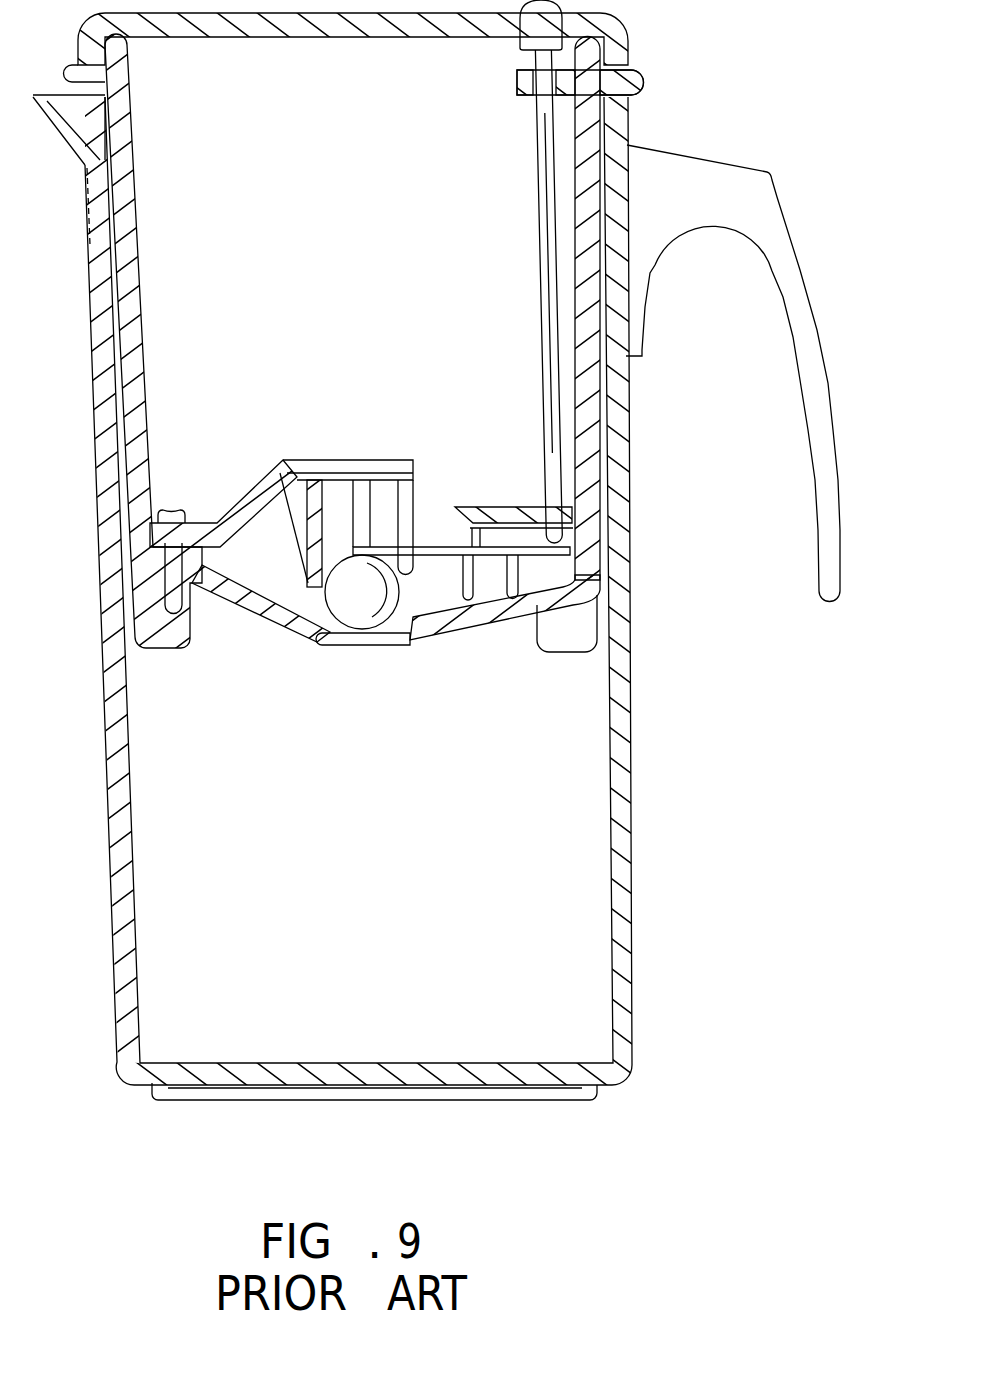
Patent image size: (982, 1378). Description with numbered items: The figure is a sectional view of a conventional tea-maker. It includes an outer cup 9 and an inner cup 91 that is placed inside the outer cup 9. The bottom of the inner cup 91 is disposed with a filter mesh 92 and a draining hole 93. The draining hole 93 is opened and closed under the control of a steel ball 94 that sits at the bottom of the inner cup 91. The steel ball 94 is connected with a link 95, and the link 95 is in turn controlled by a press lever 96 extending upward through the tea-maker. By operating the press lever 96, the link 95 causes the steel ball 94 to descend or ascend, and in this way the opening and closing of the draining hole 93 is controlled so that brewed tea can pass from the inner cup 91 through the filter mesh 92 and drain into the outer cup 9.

The outer cup 9 is at (108, 667).
The inner cup 91 is at (133, 360).
The filter mesh 92 is at (455, 507).
The draining hole 93 is at (380, 645).
The steel ball 94 is at (351, 612).
The link 95 is at (433, 550).
The press lever 96 is at (540, 250).